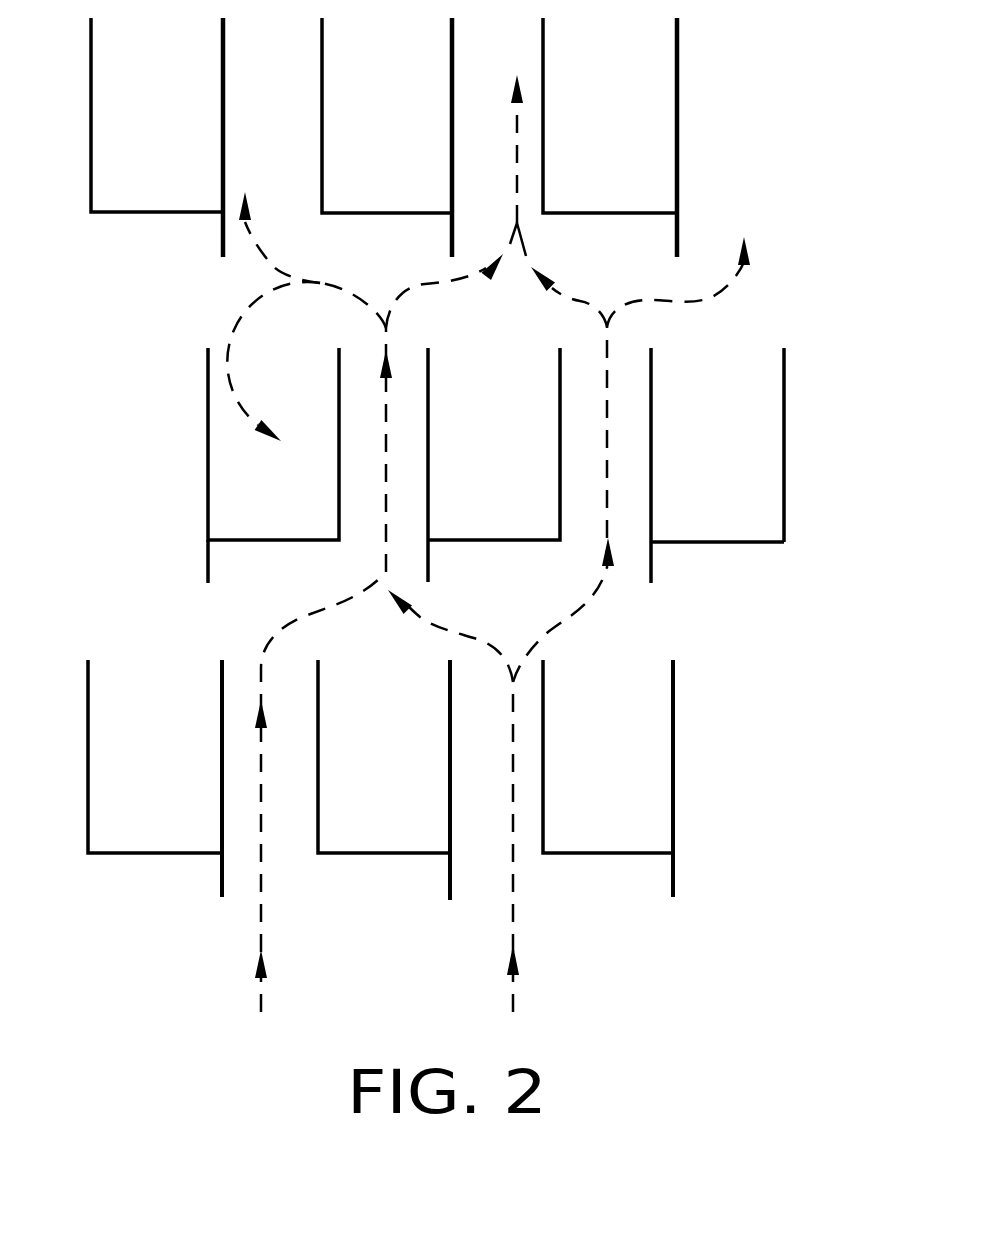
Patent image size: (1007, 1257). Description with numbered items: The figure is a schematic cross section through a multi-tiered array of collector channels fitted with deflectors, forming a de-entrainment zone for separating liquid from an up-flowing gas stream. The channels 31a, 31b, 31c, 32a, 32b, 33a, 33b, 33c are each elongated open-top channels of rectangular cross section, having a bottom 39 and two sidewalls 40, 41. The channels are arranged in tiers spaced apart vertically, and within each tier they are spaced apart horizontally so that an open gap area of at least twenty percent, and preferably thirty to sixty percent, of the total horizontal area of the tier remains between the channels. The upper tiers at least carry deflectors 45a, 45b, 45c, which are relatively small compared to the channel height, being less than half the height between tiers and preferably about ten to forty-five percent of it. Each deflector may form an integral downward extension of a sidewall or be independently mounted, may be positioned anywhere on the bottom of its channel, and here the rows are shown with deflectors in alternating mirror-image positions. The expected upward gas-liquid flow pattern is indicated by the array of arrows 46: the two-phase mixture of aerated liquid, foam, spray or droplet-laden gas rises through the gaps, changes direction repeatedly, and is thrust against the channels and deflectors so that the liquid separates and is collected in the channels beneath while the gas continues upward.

The collector channel 31a is at (215, 55).
The collector channel 31b is at (445, 55).
The collector channel 31c is at (672, 55).
The collector channel 32a is at (330, 392).
The collector channel 32b is at (552, 392).
The collector channel 33a is at (213, 700).
The collector channel 33b is at (440, 700).
The collector channel 33c is at (668, 700).
The bottom 39 is at (692, 543).
The sidewall 40 is at (784, 478).
The sidewall 41 is at (651, 430).
The deflector 45a is at (223, 237).
The deflector 45b is at (452, 240).
The deflector 45c is at (677, 237).
The arrows 46 is at (567, 620).